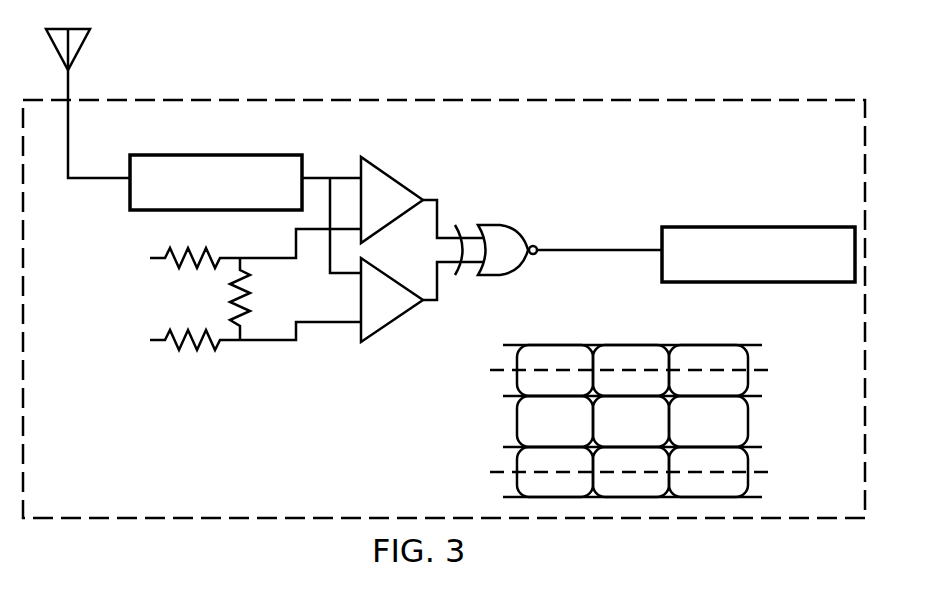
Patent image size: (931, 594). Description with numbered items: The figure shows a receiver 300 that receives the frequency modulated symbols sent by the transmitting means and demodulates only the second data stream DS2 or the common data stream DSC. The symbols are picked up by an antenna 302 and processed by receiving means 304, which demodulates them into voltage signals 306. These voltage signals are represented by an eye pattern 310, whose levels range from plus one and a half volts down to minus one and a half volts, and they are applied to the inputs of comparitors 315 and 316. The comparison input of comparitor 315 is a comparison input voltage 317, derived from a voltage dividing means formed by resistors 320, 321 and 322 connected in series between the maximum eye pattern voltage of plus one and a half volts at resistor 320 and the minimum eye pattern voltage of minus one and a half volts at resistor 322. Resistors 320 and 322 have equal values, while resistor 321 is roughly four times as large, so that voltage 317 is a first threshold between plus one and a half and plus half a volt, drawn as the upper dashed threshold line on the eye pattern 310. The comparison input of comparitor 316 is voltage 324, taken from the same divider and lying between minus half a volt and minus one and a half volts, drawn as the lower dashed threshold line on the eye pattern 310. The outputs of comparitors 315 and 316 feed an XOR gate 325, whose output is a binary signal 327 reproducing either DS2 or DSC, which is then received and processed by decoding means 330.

The receiver 300 is at (388, 88).
The antenna 302 is at (80, 40).
The receiving means 304 is at (175, 155).
The voltage signals 306 is at (322, 163).
The eye pattern 310 is at (624, 345).
The comparitor 315 is at (379, 161).
The comparitor 316 is at (403, 320).
The comparison input voltage 317 is at (260, 262).
The resistor 320 is at (196, 247).
The resistor 321 is at (228, 301).
The resistor 322 is at (177, 350).
The voltage 324 is at (278, 345).
The XOR gate 325 is at (503, 225).
The binary signal 327 is at (552, 255).
The decoding means 330 is at (724, 227).